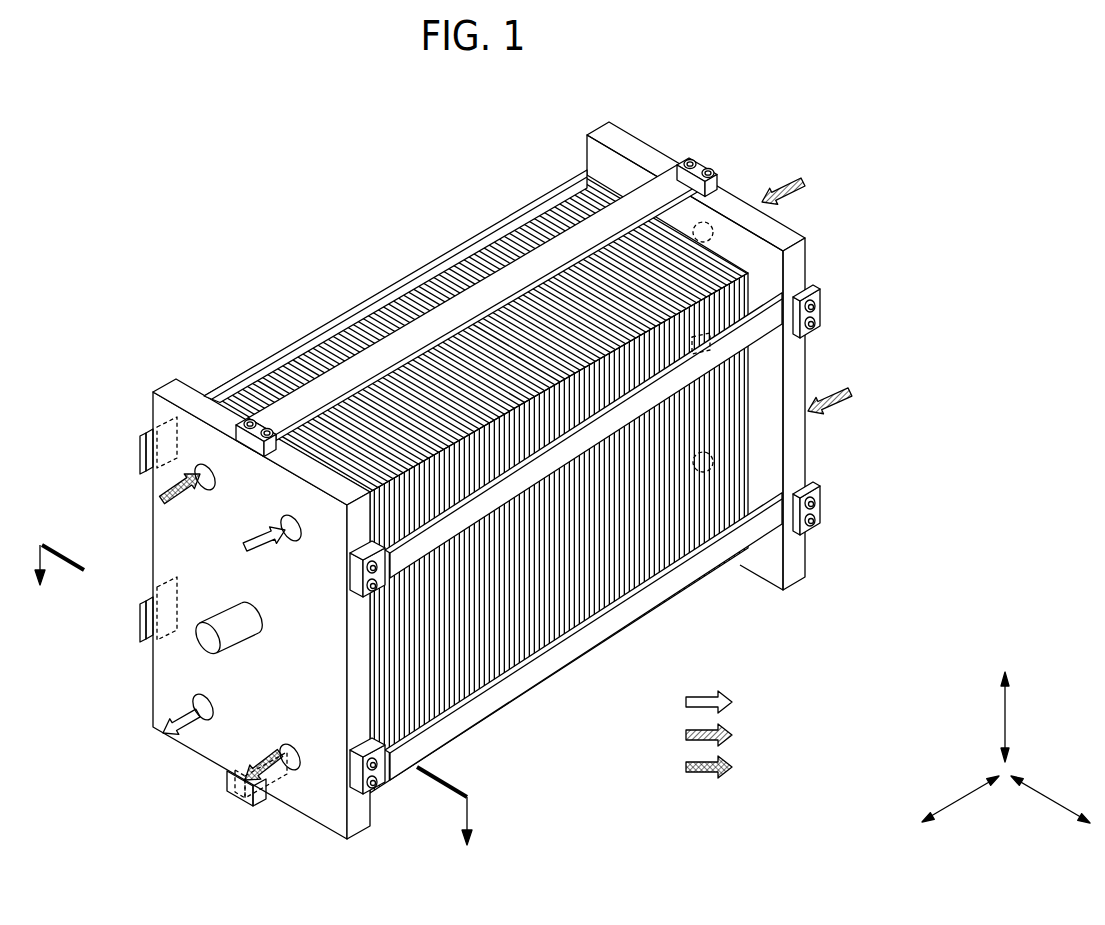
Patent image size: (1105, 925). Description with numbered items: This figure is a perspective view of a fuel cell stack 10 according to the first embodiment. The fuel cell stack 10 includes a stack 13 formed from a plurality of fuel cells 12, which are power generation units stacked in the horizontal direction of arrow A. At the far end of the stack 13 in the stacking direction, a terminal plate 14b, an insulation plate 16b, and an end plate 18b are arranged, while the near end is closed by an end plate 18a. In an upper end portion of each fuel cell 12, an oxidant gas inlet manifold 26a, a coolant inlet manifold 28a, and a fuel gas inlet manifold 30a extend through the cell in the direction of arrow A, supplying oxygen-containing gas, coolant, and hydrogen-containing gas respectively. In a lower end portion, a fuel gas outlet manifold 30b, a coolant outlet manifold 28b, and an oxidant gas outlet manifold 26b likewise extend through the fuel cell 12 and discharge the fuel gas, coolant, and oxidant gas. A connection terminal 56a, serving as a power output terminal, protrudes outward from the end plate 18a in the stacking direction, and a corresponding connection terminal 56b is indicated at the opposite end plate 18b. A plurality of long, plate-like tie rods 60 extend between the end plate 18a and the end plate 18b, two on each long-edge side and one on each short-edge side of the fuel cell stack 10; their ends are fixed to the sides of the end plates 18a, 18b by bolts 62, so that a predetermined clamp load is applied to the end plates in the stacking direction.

The fuel cell stack 10 is at (386, 103).
The fuel cell 12 is at (544, 300).
The stack 13 is at (477, 434).
The terminal plate 14b is at (740, 393).
The insulation plate 16b is at (747, 375).
The end plate 18a is at (167, 384).
The end plate 18b is at (808, 448).
The oxidant gas inlet manifold 26a is at (293, 538).
The oxidant gas outlet manifold 26b is at (205, 698).
The coolant inlet manifold 28a is at (706, 222).
The coolant outlet manifold 28b is at (712, 455).
The fuel gas inlet manifold 30a is at (208, 492).
The fuel gas outlet manifold 30b is at (291, 748).
The connection terminal 56a is at (224, 627).
The output terminal 56b is at (700, 343).
The tie rod 60 is at (357, 332).
The bolt 62 is at (362, 568).